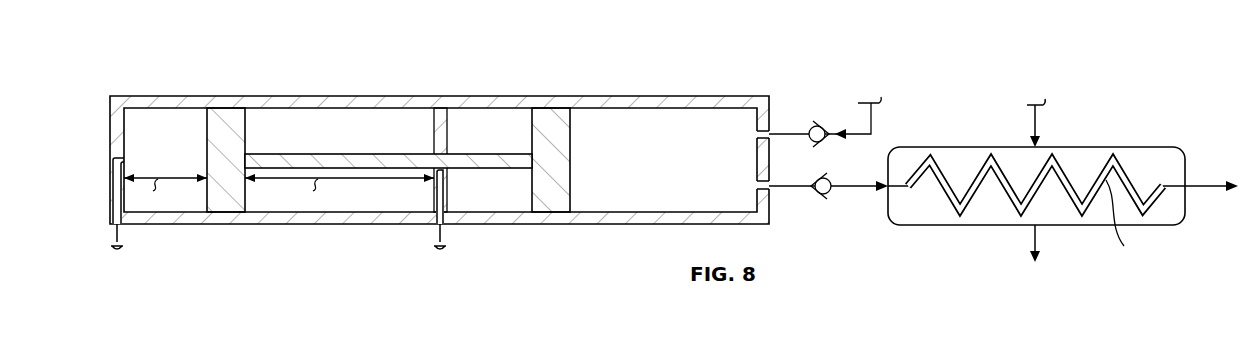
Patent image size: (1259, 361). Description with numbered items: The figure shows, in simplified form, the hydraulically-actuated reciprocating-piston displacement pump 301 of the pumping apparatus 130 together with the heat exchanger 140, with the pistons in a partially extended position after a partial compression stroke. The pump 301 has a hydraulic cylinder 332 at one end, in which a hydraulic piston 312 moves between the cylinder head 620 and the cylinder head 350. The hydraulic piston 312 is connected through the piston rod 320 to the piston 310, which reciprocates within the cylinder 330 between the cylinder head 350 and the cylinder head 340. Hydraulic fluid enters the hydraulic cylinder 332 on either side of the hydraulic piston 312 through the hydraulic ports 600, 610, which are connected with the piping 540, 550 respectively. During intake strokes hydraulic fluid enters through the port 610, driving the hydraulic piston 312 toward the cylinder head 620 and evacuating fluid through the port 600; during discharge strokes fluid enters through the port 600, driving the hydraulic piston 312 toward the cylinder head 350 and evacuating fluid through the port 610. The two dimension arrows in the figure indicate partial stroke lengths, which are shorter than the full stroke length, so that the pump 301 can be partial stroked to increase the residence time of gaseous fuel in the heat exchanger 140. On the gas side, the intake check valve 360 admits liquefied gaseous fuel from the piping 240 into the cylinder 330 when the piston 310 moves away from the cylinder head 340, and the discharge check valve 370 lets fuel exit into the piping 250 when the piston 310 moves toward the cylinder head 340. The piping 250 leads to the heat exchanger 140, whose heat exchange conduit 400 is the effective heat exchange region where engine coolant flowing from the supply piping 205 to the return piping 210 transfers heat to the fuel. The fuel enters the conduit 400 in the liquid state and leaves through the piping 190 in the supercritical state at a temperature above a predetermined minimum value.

The pump 301 is at (414, 146).
The cylinder head 620 is at (111, 130).
The hydraulic cylinder 332 is at (181, 113).
The hydraulic piston 312 is at (247, 141).
The piston rod 320 is at (360, 153).
The cylinder head 350 is at (438, 130).
The cylinder 330 is at (675, 112).
The piston 310 is at (572, 168).
The cylinder head 340 is at (762, 172).
The hydraulic port 600 is at (113, 183).
The piping 540 is at (115, 240).
The hydraulic port 610 is at (444, 190).
The piping 550 is at (449, 245).
The pumping apparatus 130 is at (850, 128).
The intake check valve 360 is at (821, 124).
The piping 240 is at (870, 120).
The discharge check valve 370 is at (816, 197).
The piping 250 is at (857, 190).
The heat exchanger 140 is at (1063, 183).
The heat exchange conduit 400 is at (1128, 178).
The supply piping 205 is at (1040, 116).
The return piping 210 is at (1038, 243).
The piping 190 is at (1206, 192).